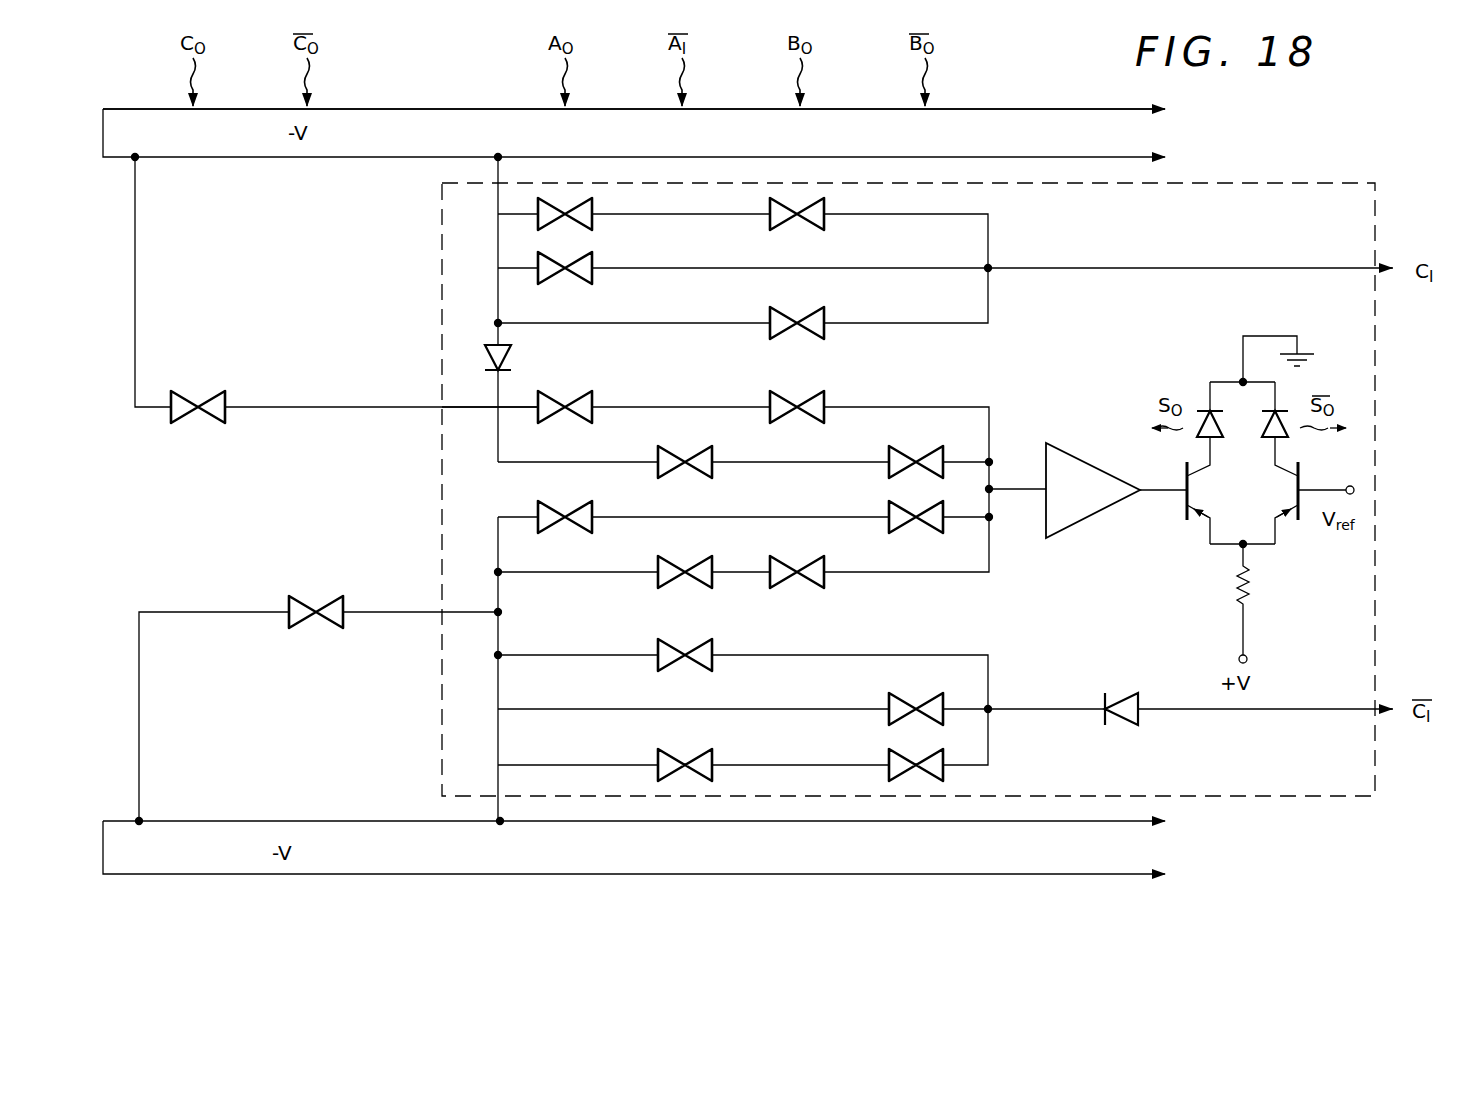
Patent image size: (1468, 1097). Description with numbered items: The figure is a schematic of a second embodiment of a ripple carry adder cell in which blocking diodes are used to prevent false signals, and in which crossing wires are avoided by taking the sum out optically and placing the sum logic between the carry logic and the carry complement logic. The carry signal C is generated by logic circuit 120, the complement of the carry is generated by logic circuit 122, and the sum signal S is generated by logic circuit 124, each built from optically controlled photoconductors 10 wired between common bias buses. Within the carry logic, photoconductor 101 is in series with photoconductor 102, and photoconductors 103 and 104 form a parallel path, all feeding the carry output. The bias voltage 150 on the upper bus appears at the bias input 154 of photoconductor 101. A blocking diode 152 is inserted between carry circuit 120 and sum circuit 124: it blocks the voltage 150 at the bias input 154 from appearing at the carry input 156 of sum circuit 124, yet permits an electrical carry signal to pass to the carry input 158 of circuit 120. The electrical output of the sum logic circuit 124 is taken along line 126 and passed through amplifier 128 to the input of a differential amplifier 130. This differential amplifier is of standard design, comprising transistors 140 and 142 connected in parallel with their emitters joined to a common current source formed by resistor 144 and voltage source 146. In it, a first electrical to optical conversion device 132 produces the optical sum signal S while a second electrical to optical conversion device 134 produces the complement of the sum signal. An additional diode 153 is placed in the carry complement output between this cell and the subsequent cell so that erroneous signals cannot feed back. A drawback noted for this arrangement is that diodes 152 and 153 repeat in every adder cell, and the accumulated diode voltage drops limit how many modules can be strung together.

The photoconductor 10 is at (226, 403).
The photoconductor 101 is at (590, 224).
The photoconductor 102 is at (822, 226).
The photoconductor 103 is at (590, 278).
The photoconductor 104 is at (824, 315).
The logic circuit 120 is at (428, 210).
The logic circuit 122 is at (428, 622).
The logic circuit 124 is at (428, 420).
The line 126 is at (1013, 488).
The amplifier 128 is at (1068, 458).
The differential amplifier 130 is at (1305, 376).
The first electrical to optical conversion device 132 is at (1204, 404).
The second electrical to optical conversion device 134 is at (1283, 425).
The transistor 140 is at (1202, 519).
The transistor 142 is at (1278, 522).
The resistor 144 is at (1250, 588).
The voltage source 146 is at (1248, 659).
The voltage 150 is at (1040, 118).
The diode 152 is at (512, 357).
The diode 153 is at (1130, 718).
The bias input 154 is at (498, 199).
The carry input 156 is at (474, 410).
The carry input 158 is at (494, 334).